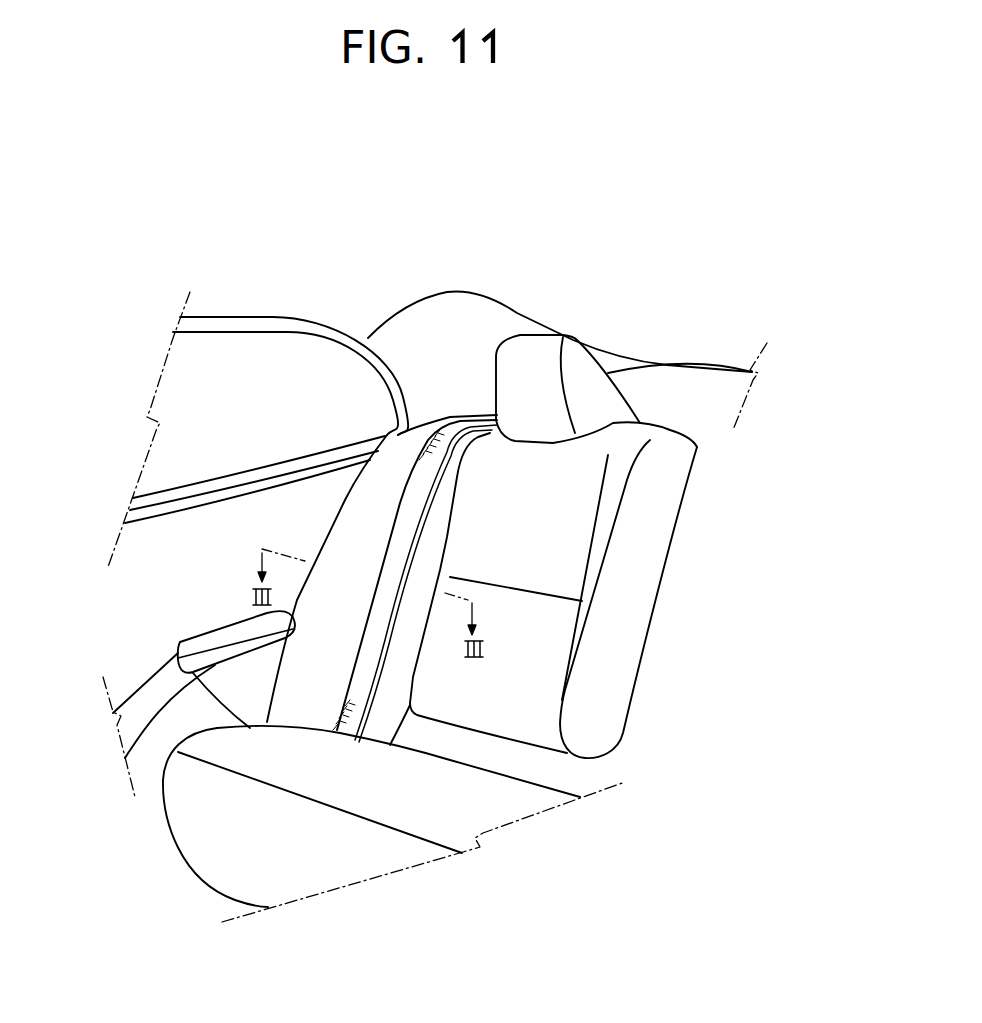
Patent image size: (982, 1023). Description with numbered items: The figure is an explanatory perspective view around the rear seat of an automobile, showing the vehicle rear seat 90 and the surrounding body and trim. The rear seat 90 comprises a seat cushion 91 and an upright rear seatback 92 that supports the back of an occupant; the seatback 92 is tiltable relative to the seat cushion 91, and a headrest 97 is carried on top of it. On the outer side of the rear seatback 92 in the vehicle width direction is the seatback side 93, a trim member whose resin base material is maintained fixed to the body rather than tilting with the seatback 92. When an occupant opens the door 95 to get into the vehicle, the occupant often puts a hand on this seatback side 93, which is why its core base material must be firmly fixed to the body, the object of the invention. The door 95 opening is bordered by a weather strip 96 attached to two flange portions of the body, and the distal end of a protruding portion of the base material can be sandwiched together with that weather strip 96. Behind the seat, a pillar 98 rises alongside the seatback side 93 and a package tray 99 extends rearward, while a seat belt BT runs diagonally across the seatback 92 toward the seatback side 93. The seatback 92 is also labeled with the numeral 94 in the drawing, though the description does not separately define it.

The vehicle rear seat 90 is at (290, 852).
The seat cushion 91 is at (394, 864).
The rear seatback 92 is at (590, 586).
The seatback side 93 is at (352, 535).
The seat back side portion 94 is at (540, 657).
The door 95 is at (215, 483).
The weather strip 96 is at (252, 320).
The headrest 97 is at (540, 348).
The pillar 98 is at (480, 327).
The package tray 99 is at (683, 388).
The seat belt BT is at (417, 468).